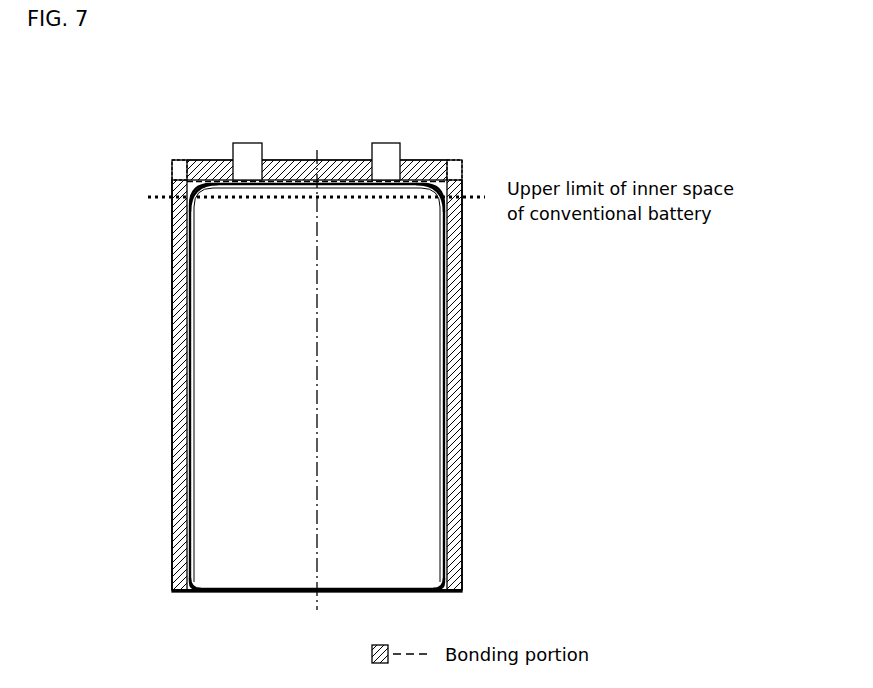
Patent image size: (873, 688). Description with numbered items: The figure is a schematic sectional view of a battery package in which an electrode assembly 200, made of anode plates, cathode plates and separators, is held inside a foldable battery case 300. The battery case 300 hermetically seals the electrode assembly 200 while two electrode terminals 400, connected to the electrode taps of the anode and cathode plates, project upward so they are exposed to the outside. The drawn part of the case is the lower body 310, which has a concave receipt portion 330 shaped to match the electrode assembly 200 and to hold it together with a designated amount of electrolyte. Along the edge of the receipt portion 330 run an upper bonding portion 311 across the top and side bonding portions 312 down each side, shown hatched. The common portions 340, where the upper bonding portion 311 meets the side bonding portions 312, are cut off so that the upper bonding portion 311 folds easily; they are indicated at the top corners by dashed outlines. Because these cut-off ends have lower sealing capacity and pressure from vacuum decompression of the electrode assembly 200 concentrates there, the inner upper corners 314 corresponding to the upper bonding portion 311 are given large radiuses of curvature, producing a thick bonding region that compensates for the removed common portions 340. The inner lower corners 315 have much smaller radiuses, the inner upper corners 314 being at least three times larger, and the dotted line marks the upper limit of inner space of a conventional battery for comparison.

The electrode assembly 200 is at (213, 488).
The battery case 300 is at (162, 313).
The lower body 310 is at (477, 468).
The upper bonding portion 311 is at (343, 160).
The side bonding portions 312 is at (172, 408).
The inner upper corners 314 is at (205, 191).
The inner lower corners 315 is at (197, 585).
The receipt portion 330 is at (443, 352).
The common portions 340 is at (172, 170).
The electrode terminals 400 is at (248, 143).